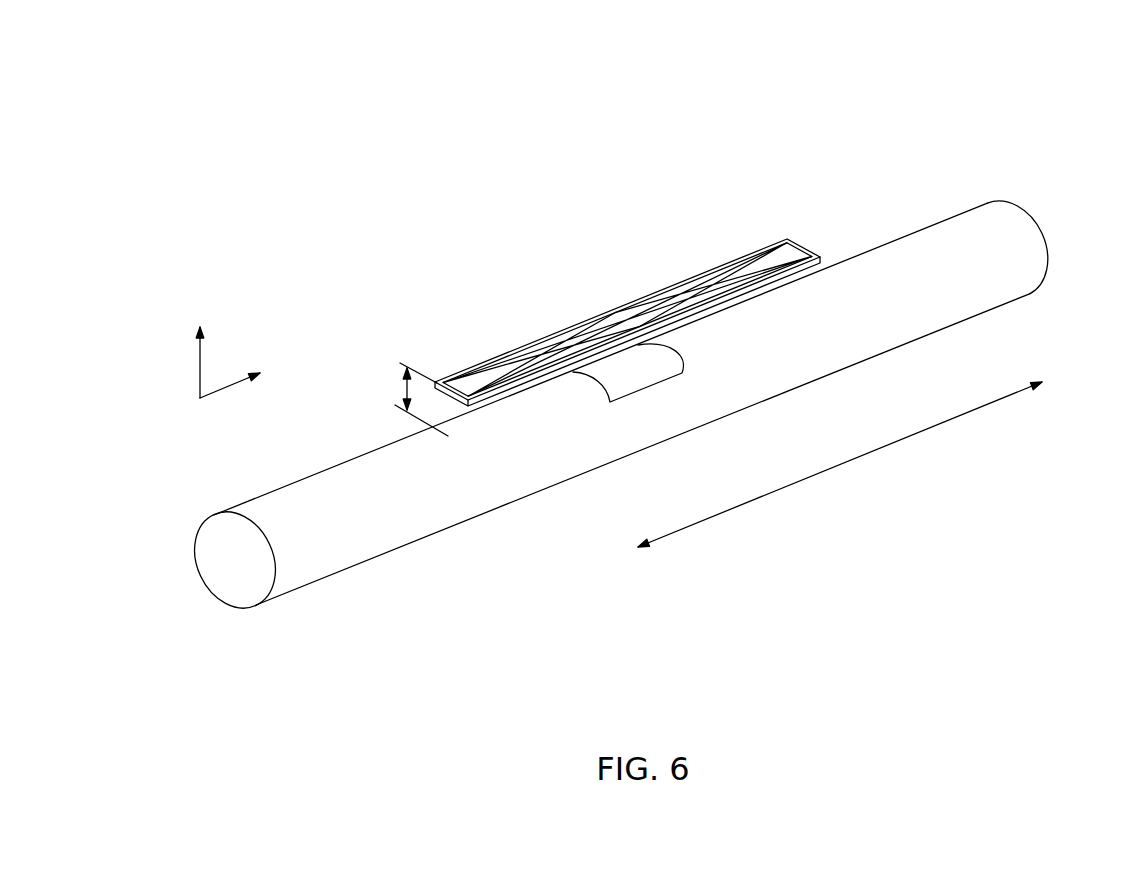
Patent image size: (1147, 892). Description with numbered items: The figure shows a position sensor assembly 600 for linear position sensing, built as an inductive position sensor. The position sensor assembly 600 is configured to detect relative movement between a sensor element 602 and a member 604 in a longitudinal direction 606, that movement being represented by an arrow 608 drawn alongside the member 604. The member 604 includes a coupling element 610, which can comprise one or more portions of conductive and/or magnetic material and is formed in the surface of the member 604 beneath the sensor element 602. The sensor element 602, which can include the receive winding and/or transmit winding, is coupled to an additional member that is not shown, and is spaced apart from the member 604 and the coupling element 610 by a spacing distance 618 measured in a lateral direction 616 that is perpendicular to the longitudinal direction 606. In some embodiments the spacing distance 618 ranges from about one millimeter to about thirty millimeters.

The position sensor assembly 600 is at (320, 192).
The sensor element 602 is at (562, 324).
The member 604 is at (1043, 267).
The longitudinal direction 606 is at (253, 378).
The arrow 608 is at (683, 531).
The coupling element 610 is at (630, 378).
The lateral direction 616 is at (204, 350).
The spacing distance 618 is at (406, 390).